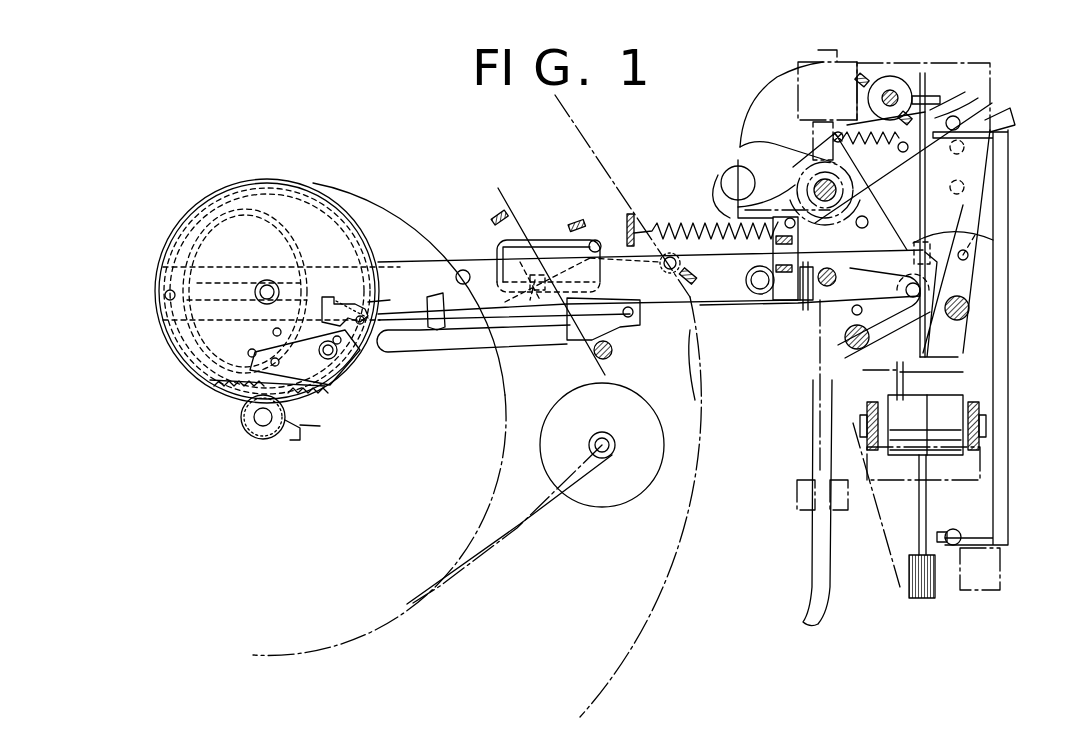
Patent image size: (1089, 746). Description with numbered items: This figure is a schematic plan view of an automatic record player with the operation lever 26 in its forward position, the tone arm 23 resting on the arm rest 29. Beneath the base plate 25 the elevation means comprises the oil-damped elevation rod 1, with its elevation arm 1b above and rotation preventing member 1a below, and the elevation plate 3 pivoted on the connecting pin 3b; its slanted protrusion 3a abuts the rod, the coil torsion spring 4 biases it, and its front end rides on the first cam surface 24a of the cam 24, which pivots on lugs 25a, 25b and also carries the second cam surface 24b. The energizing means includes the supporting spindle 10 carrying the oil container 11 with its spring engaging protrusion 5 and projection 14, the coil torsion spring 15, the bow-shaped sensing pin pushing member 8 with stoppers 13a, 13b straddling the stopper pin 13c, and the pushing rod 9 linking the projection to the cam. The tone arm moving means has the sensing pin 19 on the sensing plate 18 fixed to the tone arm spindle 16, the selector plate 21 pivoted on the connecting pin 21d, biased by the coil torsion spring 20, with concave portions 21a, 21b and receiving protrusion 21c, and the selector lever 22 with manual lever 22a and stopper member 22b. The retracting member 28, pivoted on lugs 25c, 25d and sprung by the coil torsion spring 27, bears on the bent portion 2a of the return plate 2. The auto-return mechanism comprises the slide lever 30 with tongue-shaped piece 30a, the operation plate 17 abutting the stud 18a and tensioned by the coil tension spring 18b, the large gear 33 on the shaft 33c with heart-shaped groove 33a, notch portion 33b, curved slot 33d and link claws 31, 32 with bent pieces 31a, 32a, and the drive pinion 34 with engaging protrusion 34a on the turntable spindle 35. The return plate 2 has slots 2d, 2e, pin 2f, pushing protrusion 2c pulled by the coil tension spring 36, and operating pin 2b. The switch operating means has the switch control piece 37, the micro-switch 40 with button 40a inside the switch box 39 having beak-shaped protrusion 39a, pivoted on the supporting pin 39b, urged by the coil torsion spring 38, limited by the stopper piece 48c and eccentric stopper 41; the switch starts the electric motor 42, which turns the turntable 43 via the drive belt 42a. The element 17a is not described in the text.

The elevation rod 1 is at (785, 300).
The rotation preventing member 1a is at (805, 305).
The elevation arm 1b is at (728, 218).
The return plate 2 is at (452, 262).
The bent portion 2a is at (765, 295).
The operating pin 2b is at (678, 262).
The pushing protrusion 2c is at (722, 180).
The slot 2d is at (165, 262).
The slot 2e is at (690, 345).
The pin 2f is at (160, 306).
The elevation plate 3 is at (855, 342).
The slanted protrusion 3a is at (858, 320).
The connecting pin 3b is at (866, 345).
The coil torsion spring 4 is at (870, 326).
The spring engaging protrusion 5 is at (940, 103).
The sensing pin pushing member 8 is at (1000, 120).
The pushing rod 9 is at (955, 68).
The supporting spindle 10 is at (975, 72).
The container 11 is at (935, 85).
The stopper 13a is at (845, 60).
The stopper 13b is at (922, 70).
The stopper pin 13c is at (862, 72).
The projection 14 is at (943, 90).
The coil torsion spring 15 is at (965, 105).
The tone arm spindle 16 is at (797, 165).
The operation plate 17 is at (878, 198).
The lever pin 17a is at (866, 226).
The sensing plate 18 is at (920, 140).
The stud 18a is at (735, 160).
The coil tension spring 18b is at (875, 146).
The sensing pin 19 is at (1000, 135).
The coil torsion spring 20 is at (990, 290).
The selector plate 21 is at (985, 268).
The concave portion 21a is at (995, 158).
The concave portion 21b is at (1000, 200).
The receiving protrusion 21c is at (990, 248).
The connecting pin 21d is at (972, 312).
The selector lever 22 is at (1000, 390).
The manual lever 22a is at (962, 542).
The stopper member 22b is at (1000, 180).
The tone arm 23 is at (832, 560).
The cam 24 is at (960, 447).
The cam surface 24a is at (865, 412).
The cam surface 24b is at (960, 378).
The base plate 25 is at (762, 88).
The lug 25a is at (866, 430).
The lug 25b is at (980, 412).
The lug 25c is at (740, 305).
The lug 25d is at (698, 372).
The operation lever 26 is at (930, 598).
The coil torsion spring 27 is at (672, 215).
The retracting member 28 is at (990, 228).
The arm rest 29 is at (805, 512).
The slide lever 30 is at (460, 348).
The tongue-shaped piece 30a is at (463, 282).
The link claw 31 is at (305, 392).
The downwardly bent piece 31a is at (370, 303).
The link claw 32 is at (338, 372).
The upwardly bent piece 32a is at (238, 387).
The large gear 33 is at (262, 182).
The heart-shaped groove 33a is at (213, 212).
The notch portion 33b is at (300, 426).
The shaft 33c is at (280, 283).
The curved slot 33d is at (340, 297).
The drive pinion 34 is at (247, 418).
The engaging protrusion 34a is at (292, 438).
The turntable spindle 35 is at (258, 430).
The coil tension spring 36 is at (640, 200).
The switch control piece 37 is at (567, 335).
The coil torsion spring 38 is at (492, 210).
The switch box 39 is at (525, 238).
The beak-shaped protrusion 39a is at (658, 316).
The supporting pin 39b is at (515, 330).
The micro-switch 40 is at (560, 240).
The button 40a is at (664, 264).
The eccentric stopper 41 is at (596, 354).
The electric motor 42 is at (664, 447).
The drive belt 42a is at (520, 526).
The turntable 43 is at (688, 530).
The stopper piece 48c is at (595, 225).